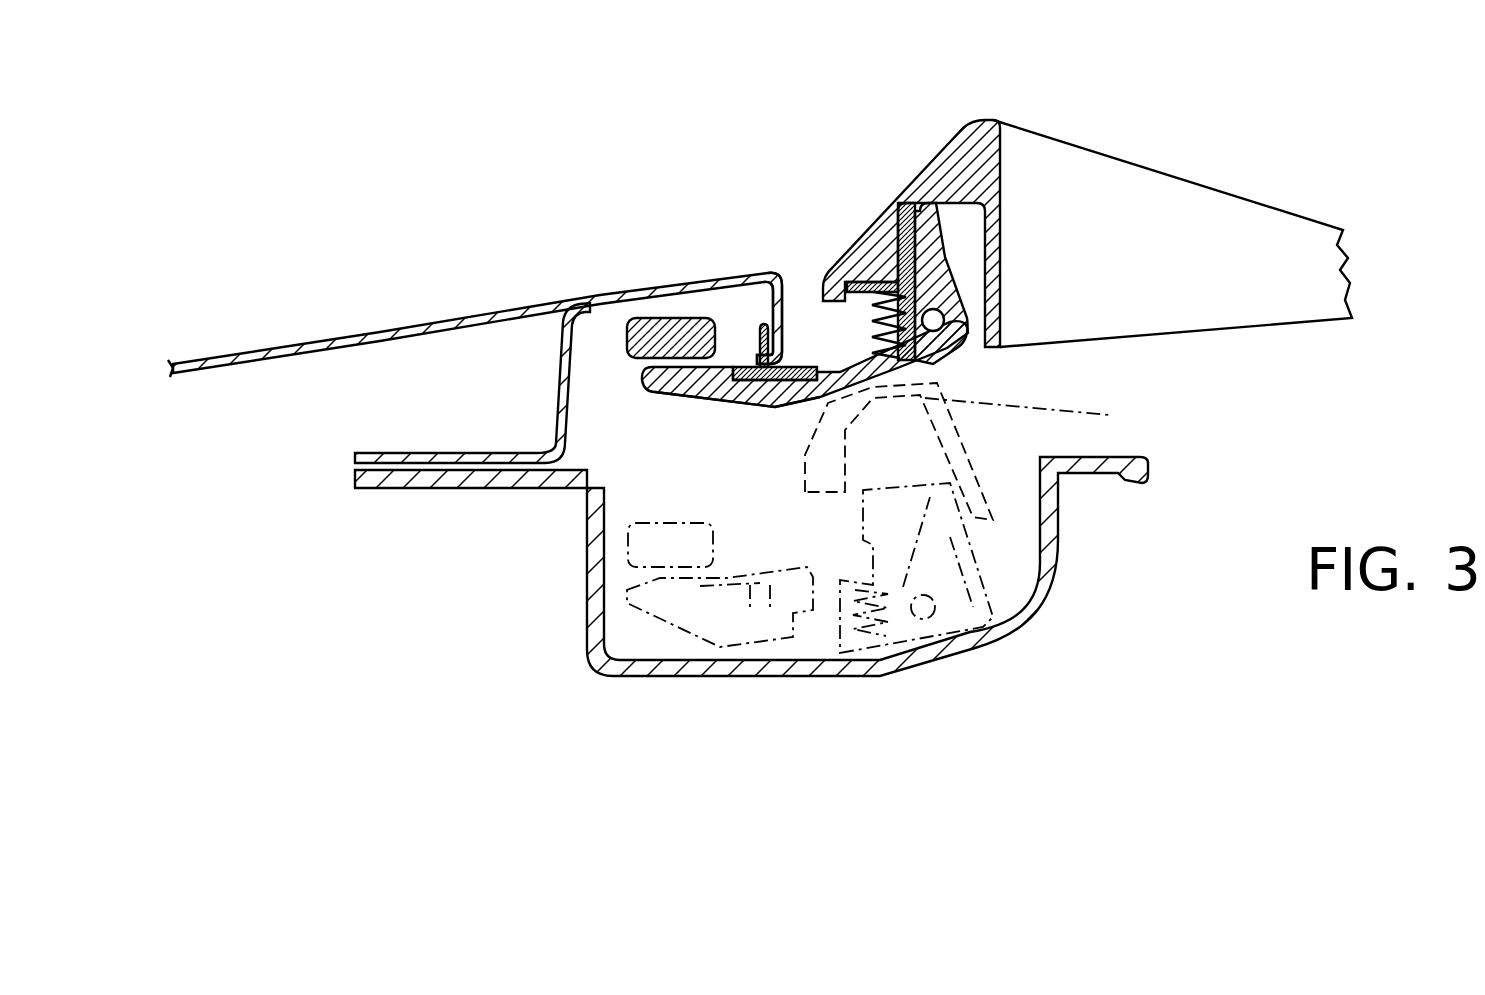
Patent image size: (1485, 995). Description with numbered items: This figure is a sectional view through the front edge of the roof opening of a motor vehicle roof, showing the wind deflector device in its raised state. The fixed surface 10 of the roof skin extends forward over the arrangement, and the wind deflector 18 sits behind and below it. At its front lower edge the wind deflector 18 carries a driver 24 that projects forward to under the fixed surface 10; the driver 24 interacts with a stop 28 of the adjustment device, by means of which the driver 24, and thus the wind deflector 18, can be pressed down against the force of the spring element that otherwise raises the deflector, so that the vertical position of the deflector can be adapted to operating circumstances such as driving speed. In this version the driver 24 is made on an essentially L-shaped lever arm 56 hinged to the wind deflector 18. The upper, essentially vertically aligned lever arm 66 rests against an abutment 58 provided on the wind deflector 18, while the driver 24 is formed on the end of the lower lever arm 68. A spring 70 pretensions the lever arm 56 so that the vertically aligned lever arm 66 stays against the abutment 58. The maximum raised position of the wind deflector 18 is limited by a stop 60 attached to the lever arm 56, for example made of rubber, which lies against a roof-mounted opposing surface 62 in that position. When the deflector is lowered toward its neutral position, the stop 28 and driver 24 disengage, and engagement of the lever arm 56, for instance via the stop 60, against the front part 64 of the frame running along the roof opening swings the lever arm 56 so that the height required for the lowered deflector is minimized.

The fixed surface 10 is at (400, 322).
The wind deflector 18 is at (958, 158).
The driver 24 is at (660, 388).
The stop 28 is at (660, 330).
The lever arm 56 is at (962, 318).
The abutment 58 is at (883, 215).
The stop 60 is at (807, 362).
The roof-mounted opposing surface 62 is at (740, 290).
The front part of the frame 64 is at (1025, 617).
The vertically aligned lever arm 66 is at (940, 253).
The lower lever arm 68 is at (713, 397).
The spring 70 is at (848, 286).